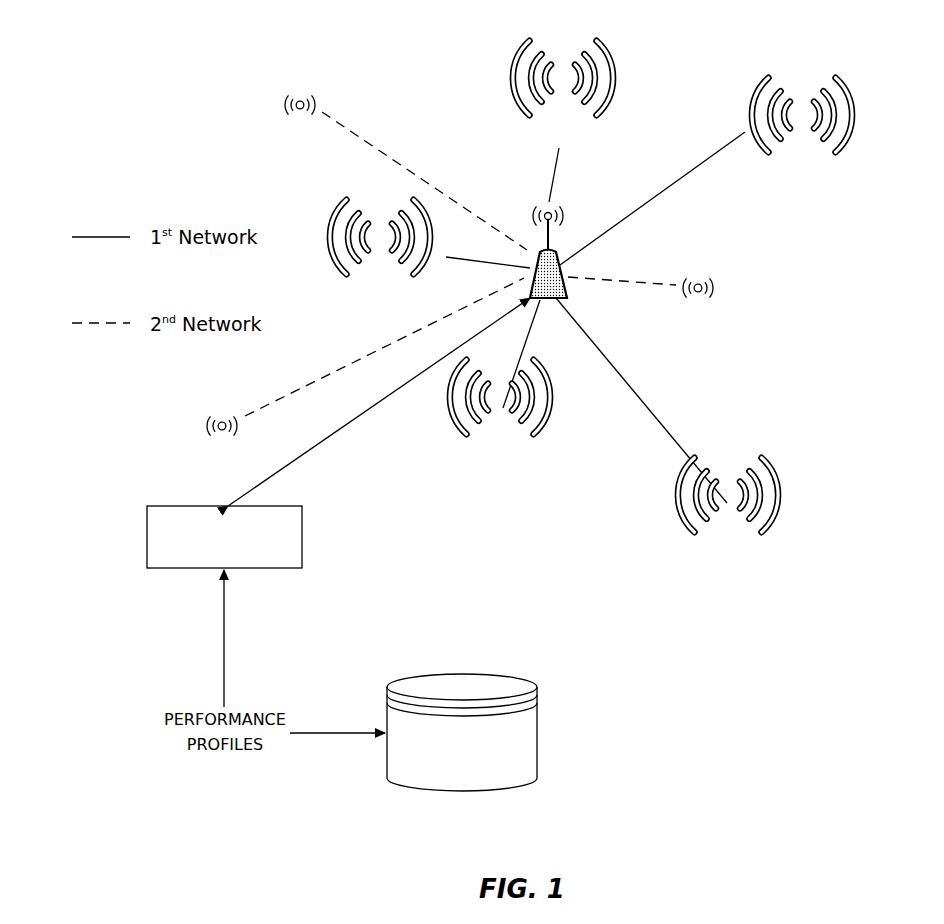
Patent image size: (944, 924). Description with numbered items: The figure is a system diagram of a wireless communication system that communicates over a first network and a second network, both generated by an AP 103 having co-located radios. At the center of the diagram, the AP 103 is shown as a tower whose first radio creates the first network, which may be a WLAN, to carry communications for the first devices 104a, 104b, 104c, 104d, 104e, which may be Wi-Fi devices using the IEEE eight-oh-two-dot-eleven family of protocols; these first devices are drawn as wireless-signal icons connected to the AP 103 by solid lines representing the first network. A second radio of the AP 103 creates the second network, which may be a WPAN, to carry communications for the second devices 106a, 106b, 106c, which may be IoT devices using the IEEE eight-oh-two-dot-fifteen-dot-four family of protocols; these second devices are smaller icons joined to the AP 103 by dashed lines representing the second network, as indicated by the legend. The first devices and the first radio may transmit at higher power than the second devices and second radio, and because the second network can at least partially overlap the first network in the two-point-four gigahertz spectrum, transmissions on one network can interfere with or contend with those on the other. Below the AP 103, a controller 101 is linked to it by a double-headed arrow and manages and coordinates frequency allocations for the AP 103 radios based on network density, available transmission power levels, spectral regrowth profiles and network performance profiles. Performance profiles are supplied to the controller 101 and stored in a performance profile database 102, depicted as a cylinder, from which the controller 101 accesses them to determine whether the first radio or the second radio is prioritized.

The controller 101 is at (262, 506).
The performance profile database 102 is at (531, 682).
The AP 103 is at (566, 214).
The first device 104a is at (430, 251).
The first device 104b is at (500, 380).
The first device 104c is at (563, 121).
The first device 104d is at (667, 428).
The first device 104e is at (706, 171).
The second device 106a is at (361, 372).
The second device 106b is at (401, 172).
The second device 106c is at (644, 302).